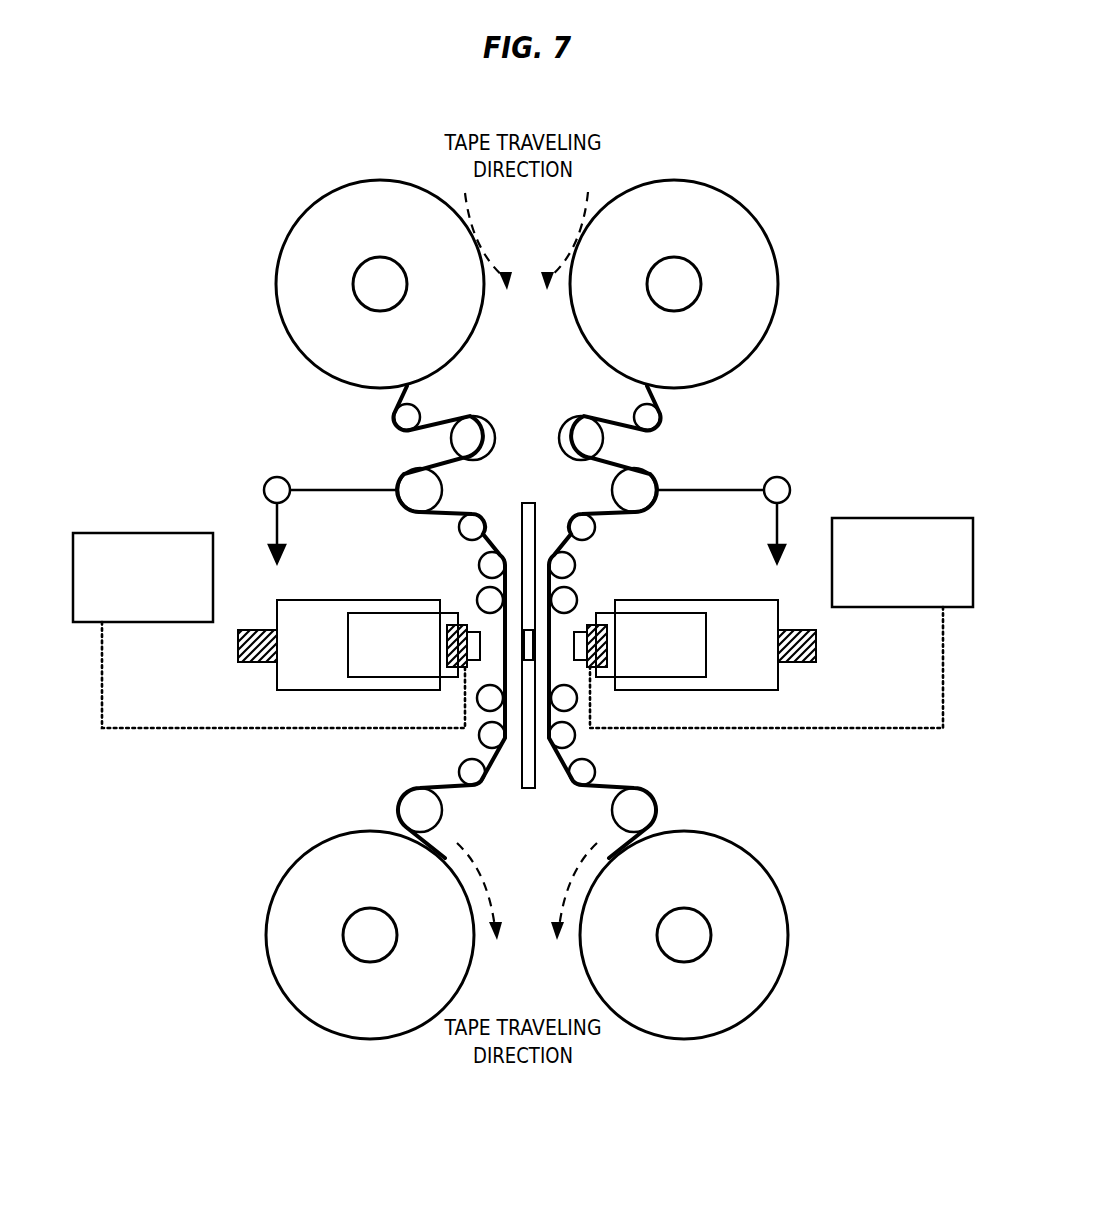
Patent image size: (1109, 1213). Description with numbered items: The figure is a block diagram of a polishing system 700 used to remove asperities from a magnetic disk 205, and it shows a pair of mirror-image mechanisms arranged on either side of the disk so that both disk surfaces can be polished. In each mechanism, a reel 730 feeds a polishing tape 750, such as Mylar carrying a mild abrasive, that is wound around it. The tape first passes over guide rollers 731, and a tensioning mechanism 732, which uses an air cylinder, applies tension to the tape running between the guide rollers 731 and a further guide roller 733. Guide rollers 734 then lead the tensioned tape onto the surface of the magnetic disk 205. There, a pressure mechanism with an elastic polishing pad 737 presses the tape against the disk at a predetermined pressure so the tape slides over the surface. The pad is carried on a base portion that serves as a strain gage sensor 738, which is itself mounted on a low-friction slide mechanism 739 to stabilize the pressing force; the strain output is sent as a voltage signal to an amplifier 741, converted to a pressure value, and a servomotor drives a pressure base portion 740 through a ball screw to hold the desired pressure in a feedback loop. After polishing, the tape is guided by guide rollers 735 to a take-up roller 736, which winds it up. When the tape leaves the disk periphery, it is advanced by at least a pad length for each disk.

The system 700 is at (852, 103).
The magnetic disk 205 is at (530, 790).
The reel 730 is at (276, 292).
The guide rollers 731 is at (407, 425).
The tensioning mechanism 732 is at (287, 500).
The guide roller 733 is at (420, 500).
The guide rollers 734 is at (488, 600).
The guide rollers 735 is at (490, 700).
The take-up roller 736 is at (278, 888).
The elastic polishing pad 737 is at (480, 652).
The strain gage sensor 738 is at (457, 646).
The slide mechanism 739 is at (378, 612).
The pressure base portion 740 is at (288, 604).
The amplifier 741 is at (148, 533).
The polishing tape 750 is at (647, 394).